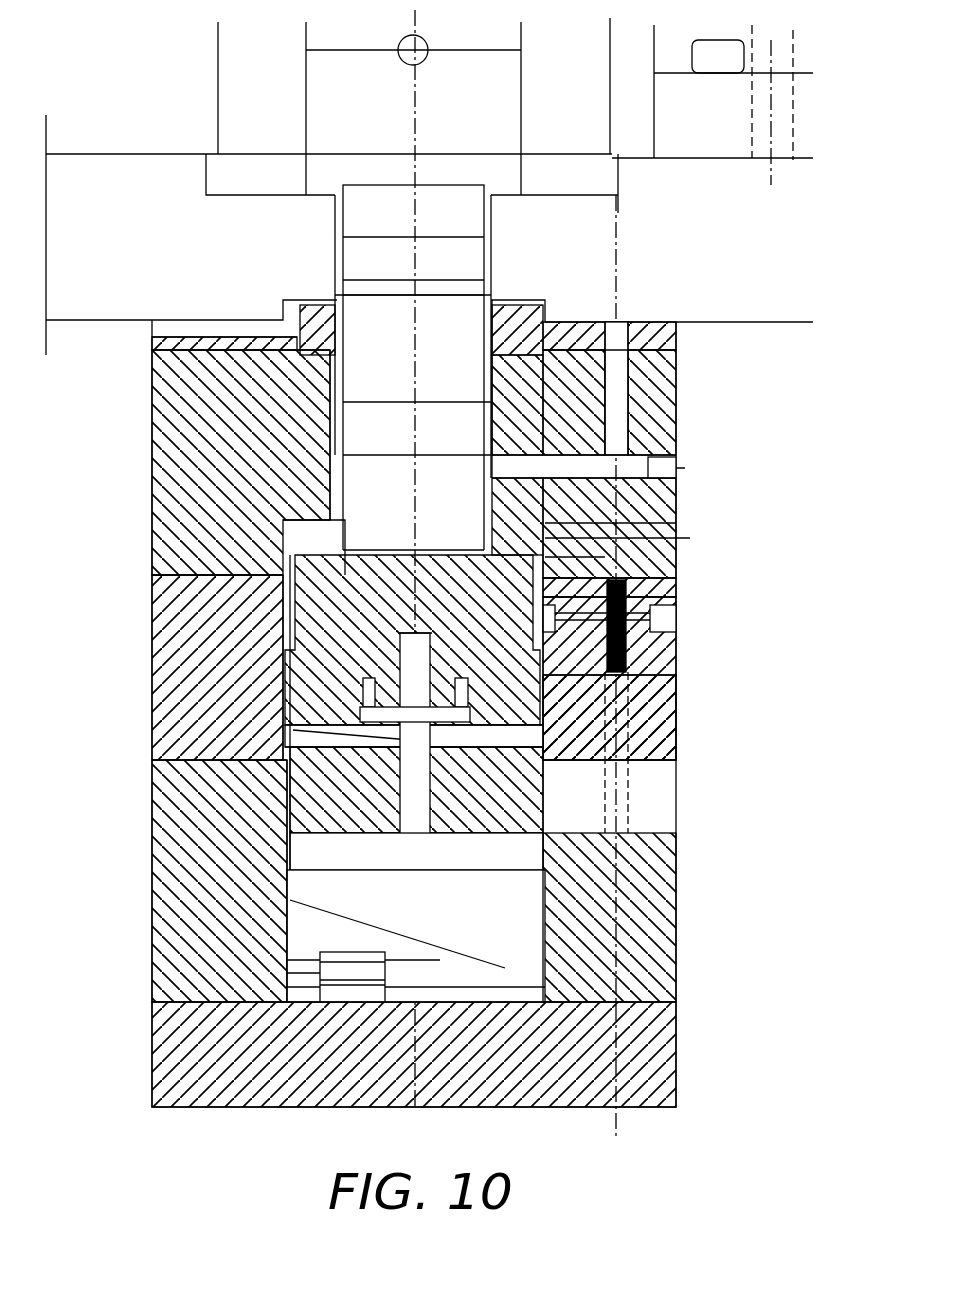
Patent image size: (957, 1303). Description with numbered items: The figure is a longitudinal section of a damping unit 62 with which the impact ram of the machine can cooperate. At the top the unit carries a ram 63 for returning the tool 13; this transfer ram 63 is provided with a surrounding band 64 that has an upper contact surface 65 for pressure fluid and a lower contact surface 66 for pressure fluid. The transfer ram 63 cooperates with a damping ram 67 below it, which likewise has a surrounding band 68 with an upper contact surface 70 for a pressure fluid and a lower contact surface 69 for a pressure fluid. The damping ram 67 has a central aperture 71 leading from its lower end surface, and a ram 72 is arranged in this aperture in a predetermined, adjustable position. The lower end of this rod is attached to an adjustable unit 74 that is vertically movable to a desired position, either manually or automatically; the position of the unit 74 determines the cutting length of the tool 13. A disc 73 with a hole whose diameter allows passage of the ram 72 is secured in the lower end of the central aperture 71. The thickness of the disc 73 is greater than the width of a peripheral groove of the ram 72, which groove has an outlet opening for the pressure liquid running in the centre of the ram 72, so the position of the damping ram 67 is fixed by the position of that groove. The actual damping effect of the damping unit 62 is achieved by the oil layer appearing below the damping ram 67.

The tool 13 is at (448, 110).
The ram 63 is at (432, 263).
The upper contact surface for pressure fluid 65 is at (330, 402).
The surrounding band 64 is at (377, 430).
The damping unit 62 is at (676, 405).
The lower contact surface for pressure fluid 66 is at (327, 470).
The upper contact surface for a pressure fluid 70 is at (285, 640).
The damping ram 67 is at (463, 597).
The surrounding band 68 is at (545, 679).
The central aperture 71 is at (413, 667).
The disc 73 is at (500, 730).
The lower contact surface for a pressure fluid 69 is at (435, 764).
The ram 72 is at (445, 830).
The adjustable unit 74 is at (440, 915).